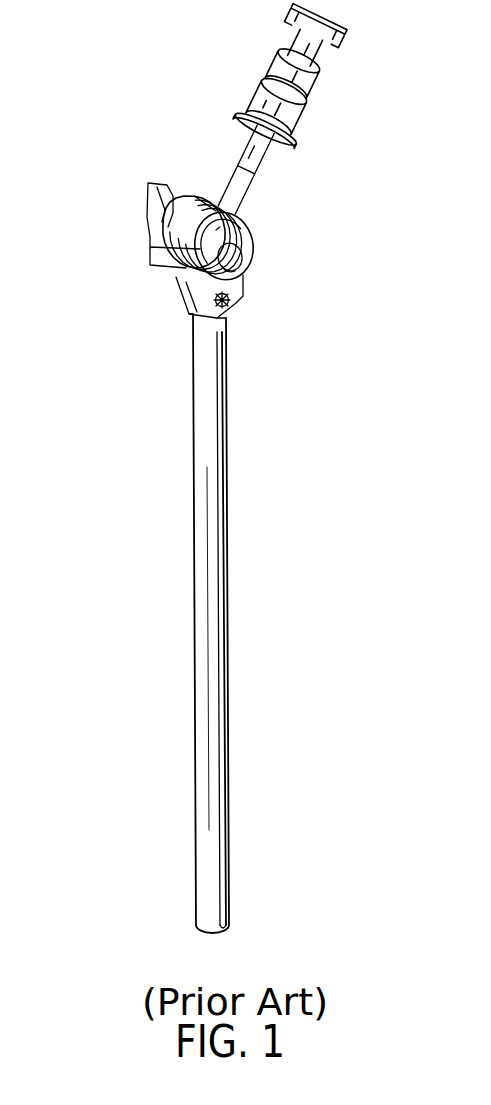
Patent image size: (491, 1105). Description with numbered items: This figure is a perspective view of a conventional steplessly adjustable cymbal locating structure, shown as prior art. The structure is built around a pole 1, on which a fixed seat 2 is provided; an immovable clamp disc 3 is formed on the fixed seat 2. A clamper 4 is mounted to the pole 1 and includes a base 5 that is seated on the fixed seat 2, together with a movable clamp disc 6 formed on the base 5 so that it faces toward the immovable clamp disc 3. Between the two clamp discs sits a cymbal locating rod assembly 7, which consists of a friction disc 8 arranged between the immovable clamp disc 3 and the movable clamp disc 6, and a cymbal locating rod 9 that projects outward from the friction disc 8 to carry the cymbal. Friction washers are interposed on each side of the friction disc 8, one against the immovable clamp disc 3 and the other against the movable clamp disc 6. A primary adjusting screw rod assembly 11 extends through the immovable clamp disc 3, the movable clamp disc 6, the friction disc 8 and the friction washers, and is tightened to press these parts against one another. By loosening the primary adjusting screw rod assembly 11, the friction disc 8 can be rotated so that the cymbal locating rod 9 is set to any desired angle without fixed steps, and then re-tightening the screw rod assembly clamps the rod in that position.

The pole 1 is at (207, 467).
The fixed seat 2 is at (163, 270).
The immovable clamp disc 3 is at (163, 252).
The clamper 4 is at (240, 273).
The base 5 is at (237, 307).
The movable clamp disc 6 is at (245, 240).
The cymbal locating rod assembly 7 is at (292, 109).
The friction disc 8 is at (208, 212).
The cymbal locating rod 9 is at (255, 184).
The primary adjusting screw rod assembly 11 is at (153, 202).